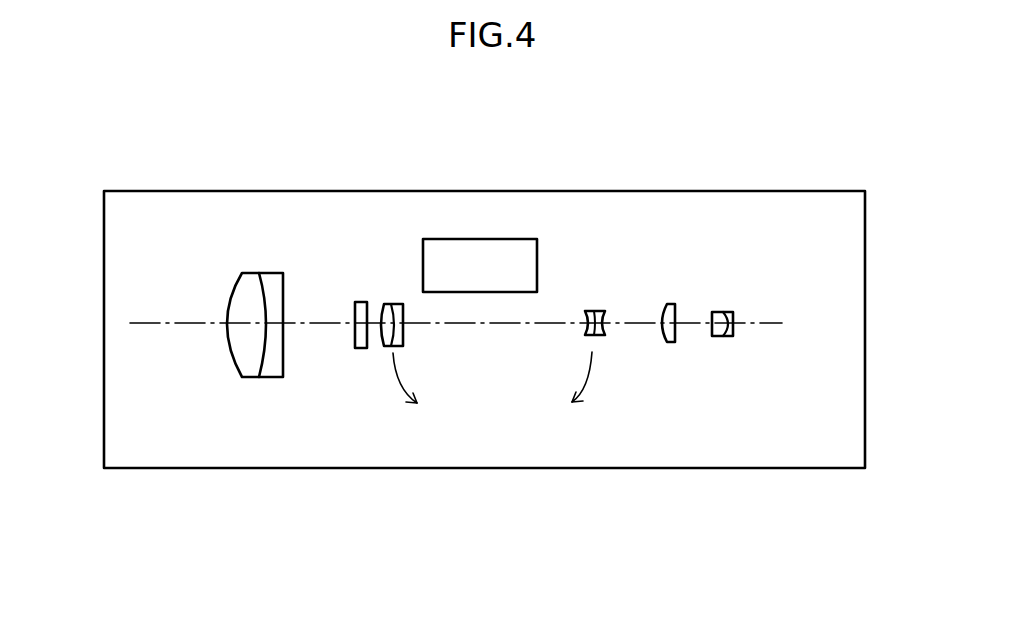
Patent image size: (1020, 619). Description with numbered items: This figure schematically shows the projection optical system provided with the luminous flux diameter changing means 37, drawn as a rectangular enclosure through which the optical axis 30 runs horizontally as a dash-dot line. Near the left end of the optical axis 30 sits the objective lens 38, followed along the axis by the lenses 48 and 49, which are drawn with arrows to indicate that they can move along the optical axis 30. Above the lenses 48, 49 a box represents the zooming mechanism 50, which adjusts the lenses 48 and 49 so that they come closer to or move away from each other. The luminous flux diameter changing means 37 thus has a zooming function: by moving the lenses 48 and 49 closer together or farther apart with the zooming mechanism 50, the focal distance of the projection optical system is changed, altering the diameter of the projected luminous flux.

The optical axis 30 is at (193, 323).
The luminous flux diameter changing means 37 is at (777, 468).
The objective lens 38 is at (248, 378).
The lens 48 is at (373, 352).
The lens 49 is at (598, 343).
The zooming mechanism 50 is at (497, 239).